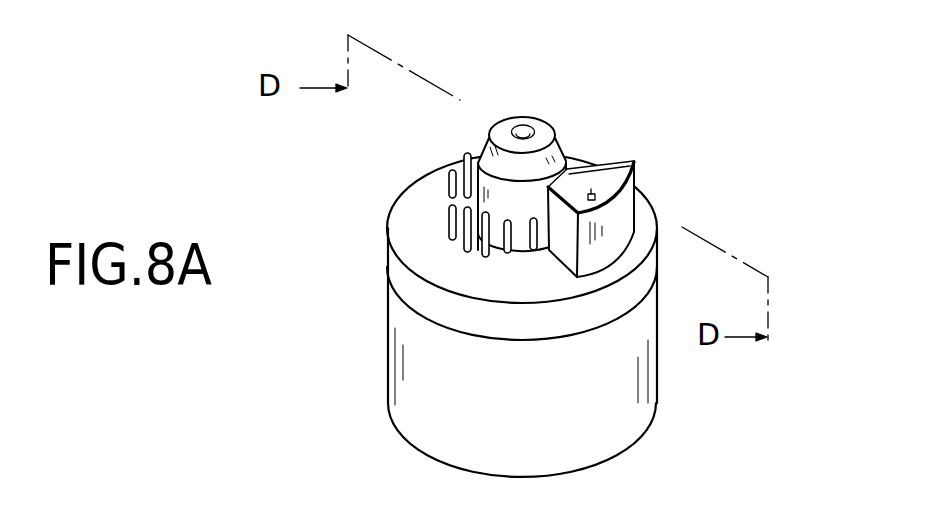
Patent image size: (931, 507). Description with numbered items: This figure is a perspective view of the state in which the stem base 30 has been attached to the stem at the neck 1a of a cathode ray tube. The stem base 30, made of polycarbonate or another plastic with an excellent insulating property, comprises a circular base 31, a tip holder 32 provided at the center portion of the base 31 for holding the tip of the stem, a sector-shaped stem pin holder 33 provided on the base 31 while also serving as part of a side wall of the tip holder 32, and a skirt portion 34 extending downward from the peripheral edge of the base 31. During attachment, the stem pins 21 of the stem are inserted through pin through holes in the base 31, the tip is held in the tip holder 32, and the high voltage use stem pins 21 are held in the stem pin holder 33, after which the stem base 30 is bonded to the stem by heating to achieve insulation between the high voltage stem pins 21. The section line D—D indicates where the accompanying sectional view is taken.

The stem base 30 is at (537, 130).
The tip holder 32 is at (563, 152).
The stem pins 21 is at (592, 194).
The stem pin holder 33 is at (626, 216).
The base 31 is at (407, 221).
The skirt portion 34 is at (400, 272).
The neck 1a is at (633, 396).